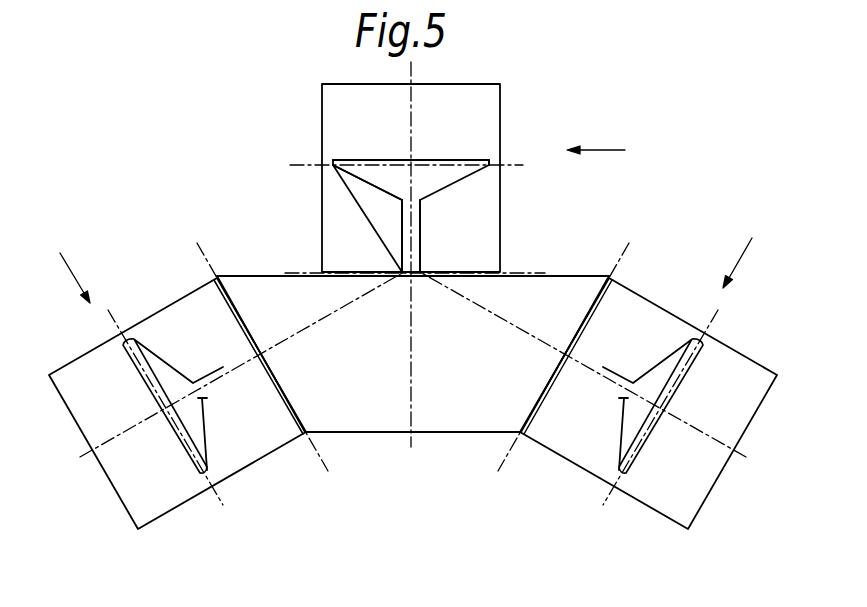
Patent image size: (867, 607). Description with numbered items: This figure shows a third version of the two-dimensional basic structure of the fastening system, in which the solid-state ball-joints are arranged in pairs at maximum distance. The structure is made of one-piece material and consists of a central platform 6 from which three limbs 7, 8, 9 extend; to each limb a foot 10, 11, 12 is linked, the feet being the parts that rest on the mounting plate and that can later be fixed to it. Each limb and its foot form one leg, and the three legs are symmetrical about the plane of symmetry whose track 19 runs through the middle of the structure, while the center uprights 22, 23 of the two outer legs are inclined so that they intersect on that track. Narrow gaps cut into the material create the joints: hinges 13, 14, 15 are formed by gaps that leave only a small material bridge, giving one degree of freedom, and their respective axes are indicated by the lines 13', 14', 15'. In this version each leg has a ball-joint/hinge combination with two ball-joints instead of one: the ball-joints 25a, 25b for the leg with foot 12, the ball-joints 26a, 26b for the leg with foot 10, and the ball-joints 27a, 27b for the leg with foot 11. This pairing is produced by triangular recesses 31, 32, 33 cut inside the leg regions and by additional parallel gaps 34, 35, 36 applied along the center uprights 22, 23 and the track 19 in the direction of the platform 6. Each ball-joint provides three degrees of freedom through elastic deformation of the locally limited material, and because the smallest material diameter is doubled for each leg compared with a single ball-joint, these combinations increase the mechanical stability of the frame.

The platform 6 is at (445, 435).
The limb 7 is at (745, 247).
The limb 8 is at (607, 151).
The limb 9 is at (69, 261).
The foot 10 is at (702, 480).
The foot 11 is at (484, 117).
The foot 12 is at (92, 422).
The hinge 13 is at (279, 357).
The left side face axis 13' is at (553, 383).
The hinge 14 is at (413, 248).
The top face axis 14' is at (426, 247).
The hinge 15 is at (568, 357).
The right side face axis 15' is at (294, 374).
The track of the plane of symmetry 19 is at (410, 131).
The center upright 22 is at (491, 312).
The center upright 23 is at (335, 312).
The ball-joint 25a is at (127, 340).
The ball-joint 25b is at (213, 478).
The ball-joint 26a is at (608, 487).
The ball-joint 26b is at (710, 335).
The ball-joint 27a is at (333, 160).
The ball-joint 27b is at (495, 172).
The triangular recess 31 is at (184, 420).
The triangular recess 32 is at (663, 393).
The triangular recess 33 is at (372, 175).
The parallel gap 34 is at (222, 368).
The parallel gap 35 is at (600, 372).
The parallel gap 36 is at (410, 240).